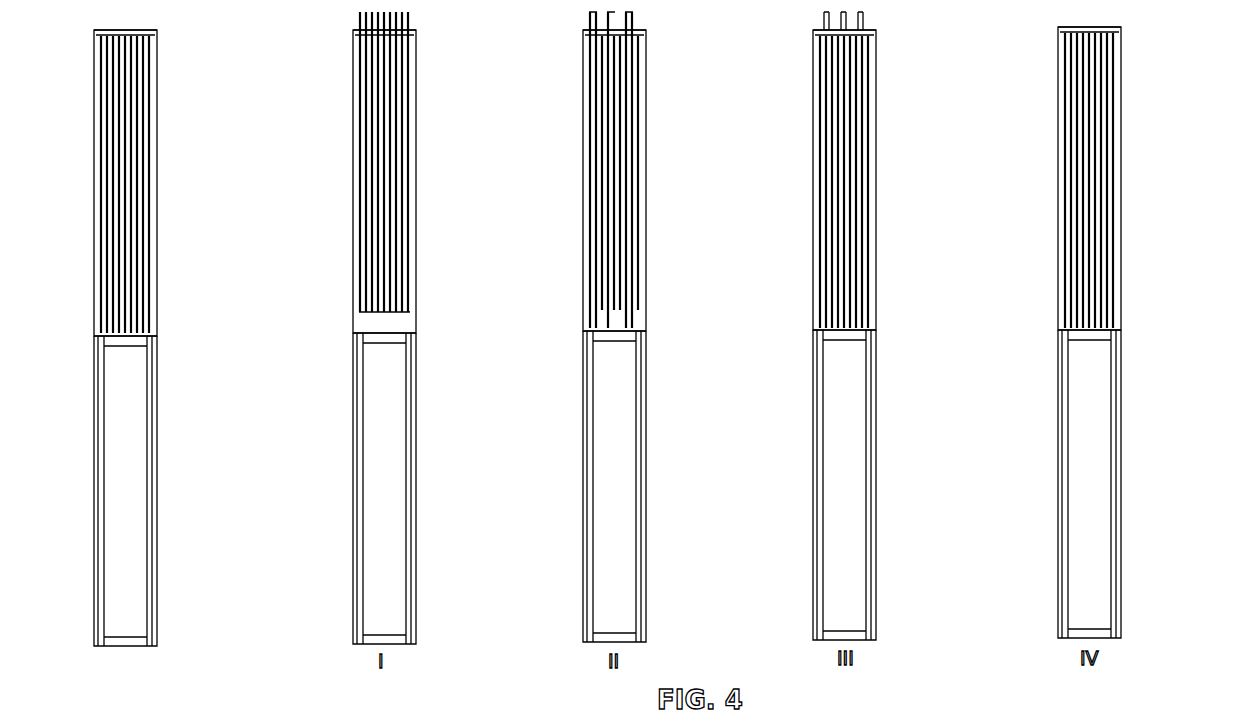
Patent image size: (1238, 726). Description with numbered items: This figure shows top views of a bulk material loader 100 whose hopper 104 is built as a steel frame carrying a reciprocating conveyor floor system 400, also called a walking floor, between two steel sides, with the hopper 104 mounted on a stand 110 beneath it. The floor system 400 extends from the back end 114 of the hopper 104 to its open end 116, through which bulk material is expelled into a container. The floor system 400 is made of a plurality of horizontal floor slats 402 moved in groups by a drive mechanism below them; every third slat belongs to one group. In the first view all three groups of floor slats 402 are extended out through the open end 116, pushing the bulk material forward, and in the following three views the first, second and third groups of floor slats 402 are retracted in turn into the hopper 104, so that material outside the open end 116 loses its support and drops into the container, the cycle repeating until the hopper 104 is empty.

The bulk material loader 100 is at (664, 329).
The hopper 104 is at (159, 197).
The stand 110 is at (159, 455).
The back end 114 is at (153, 333).
The open end 116 is at (152, 40).
The reciprocating conveyor floor system 400 is at (145, 170).
The floor slats 402 is at (145, 133).